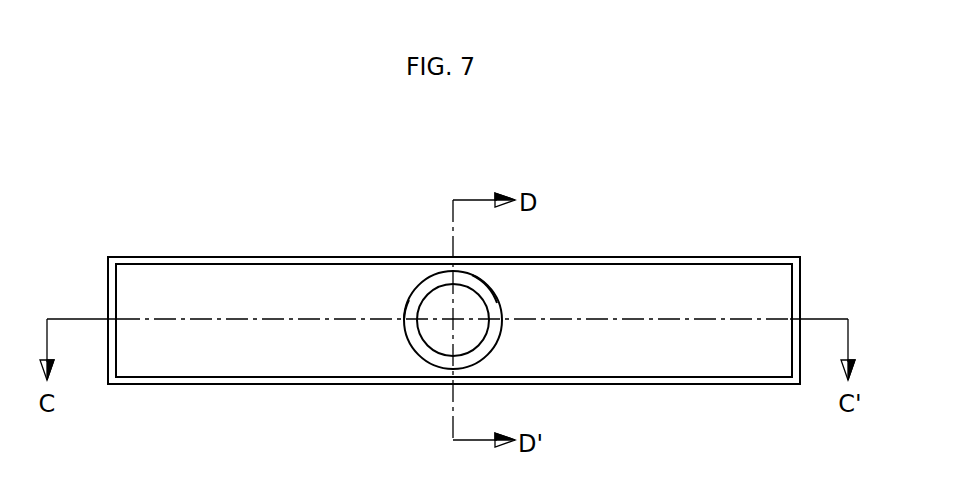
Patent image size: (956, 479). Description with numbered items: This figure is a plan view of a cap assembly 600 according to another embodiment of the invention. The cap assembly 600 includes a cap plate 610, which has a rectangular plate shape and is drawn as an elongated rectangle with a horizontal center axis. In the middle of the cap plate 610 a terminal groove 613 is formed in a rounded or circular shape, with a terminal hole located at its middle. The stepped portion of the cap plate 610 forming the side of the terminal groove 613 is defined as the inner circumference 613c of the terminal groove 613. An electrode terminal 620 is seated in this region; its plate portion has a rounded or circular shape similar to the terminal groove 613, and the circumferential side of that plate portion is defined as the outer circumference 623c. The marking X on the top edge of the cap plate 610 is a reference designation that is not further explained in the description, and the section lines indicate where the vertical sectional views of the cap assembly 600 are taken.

The cap assembly 600 is at (193, 222).
The cap plate 610 is at (693, 283).
The terminal groove 613 is at (421, 275).
The inner circumference 613c is at (492, 285).
The outer circumference 623c is at (415, 303).
The electrode terminal 620 is at (437, 338).
The reference axis X is at (757, 262).